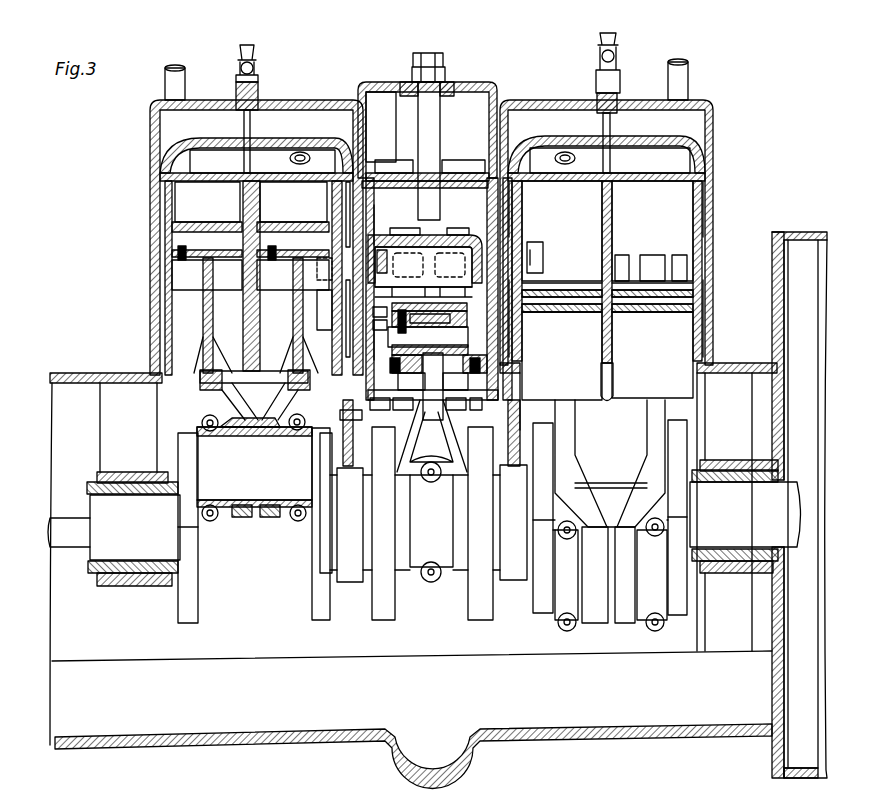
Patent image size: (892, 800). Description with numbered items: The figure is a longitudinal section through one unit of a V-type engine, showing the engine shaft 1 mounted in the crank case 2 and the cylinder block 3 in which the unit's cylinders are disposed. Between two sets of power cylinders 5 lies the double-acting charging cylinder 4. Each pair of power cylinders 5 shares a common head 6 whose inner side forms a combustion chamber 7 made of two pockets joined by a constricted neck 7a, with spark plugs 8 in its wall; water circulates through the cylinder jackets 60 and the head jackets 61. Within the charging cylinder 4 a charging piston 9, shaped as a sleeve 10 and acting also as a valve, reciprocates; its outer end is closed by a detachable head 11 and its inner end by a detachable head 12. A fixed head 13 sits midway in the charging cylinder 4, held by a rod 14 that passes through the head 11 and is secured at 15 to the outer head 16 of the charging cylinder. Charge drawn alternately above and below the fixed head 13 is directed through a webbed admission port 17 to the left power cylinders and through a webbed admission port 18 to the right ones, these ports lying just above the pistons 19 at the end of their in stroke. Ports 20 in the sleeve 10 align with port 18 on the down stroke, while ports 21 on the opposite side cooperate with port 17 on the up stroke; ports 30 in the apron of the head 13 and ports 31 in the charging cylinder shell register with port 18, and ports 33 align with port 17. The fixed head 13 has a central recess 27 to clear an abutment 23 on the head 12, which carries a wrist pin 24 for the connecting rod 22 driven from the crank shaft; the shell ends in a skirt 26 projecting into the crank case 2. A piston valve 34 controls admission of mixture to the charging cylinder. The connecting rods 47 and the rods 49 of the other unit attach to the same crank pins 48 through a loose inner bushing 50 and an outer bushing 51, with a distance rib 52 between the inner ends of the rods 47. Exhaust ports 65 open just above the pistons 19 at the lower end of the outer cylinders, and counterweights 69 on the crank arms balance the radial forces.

The engine shaft 1 is at (115, 550).
The crank case 2 is at (110, 375).
The cylinder block 3 is at (713, 232).
The charging cylinder 4 is at (499, 86).
The power cylinders 5 is at (430, 56).
The common head 6 is at (150, 140).
The combustion chamber 7 is at (195, 165).
The constricted neck or passage 7a is at (660, 158).
The spark plugs 8 is at (290, 158).
The charging piston 9 is at (486, 190).
The sleeve 10 is at (380, 165).
The outer head of the sleeve 11 is at (400, 162).
The inner head of the sleeve 12 is at (470, 342).
The fixed head 13 is at (543, 258).
The rod 14 is at (440, 128).
The securing point of the rod 15 is at (444, 80).
The outer head of the charging cylinder 16 is at (364, 92).
The webbed admission port 17 is at (328, 282).
The webbed admission port 18 is at (538, 250).
The pistons 19 is at (168, 205).
The webbed ports 20 is at (520, 205).
The ports 21 is at (348, 332).
The connecting rod 22 is at (420, 412).
The abutment 23 is at (455, 308).
The wrist pin 24 is at (442, 322).
The skirt 26 is at (365, 400).
The central recess 27 is at (404, 262).
The ports 30 is at (423, 267).
The ports 31 is at (428, 339).
The ports 33 is at (380, 250).
The piston valve 34 is at (423, 285).
The connecting rods 47 is at (203, 322).
The crank pins 48 is at (212, 460).
The connecting rods 49 is at (214, 522).
The inner bushing 50 is at (242, 504).
The outer bushing 51 is at (280, 504).
The distance rib 52 is at (270, 416).
The cylinder jackets 60 is at (165, 246).
The head jackets 61 is at (170, 130).
The exhaust ports 65 is at (682, 265).
The counterweights 69 is at (198, 600).